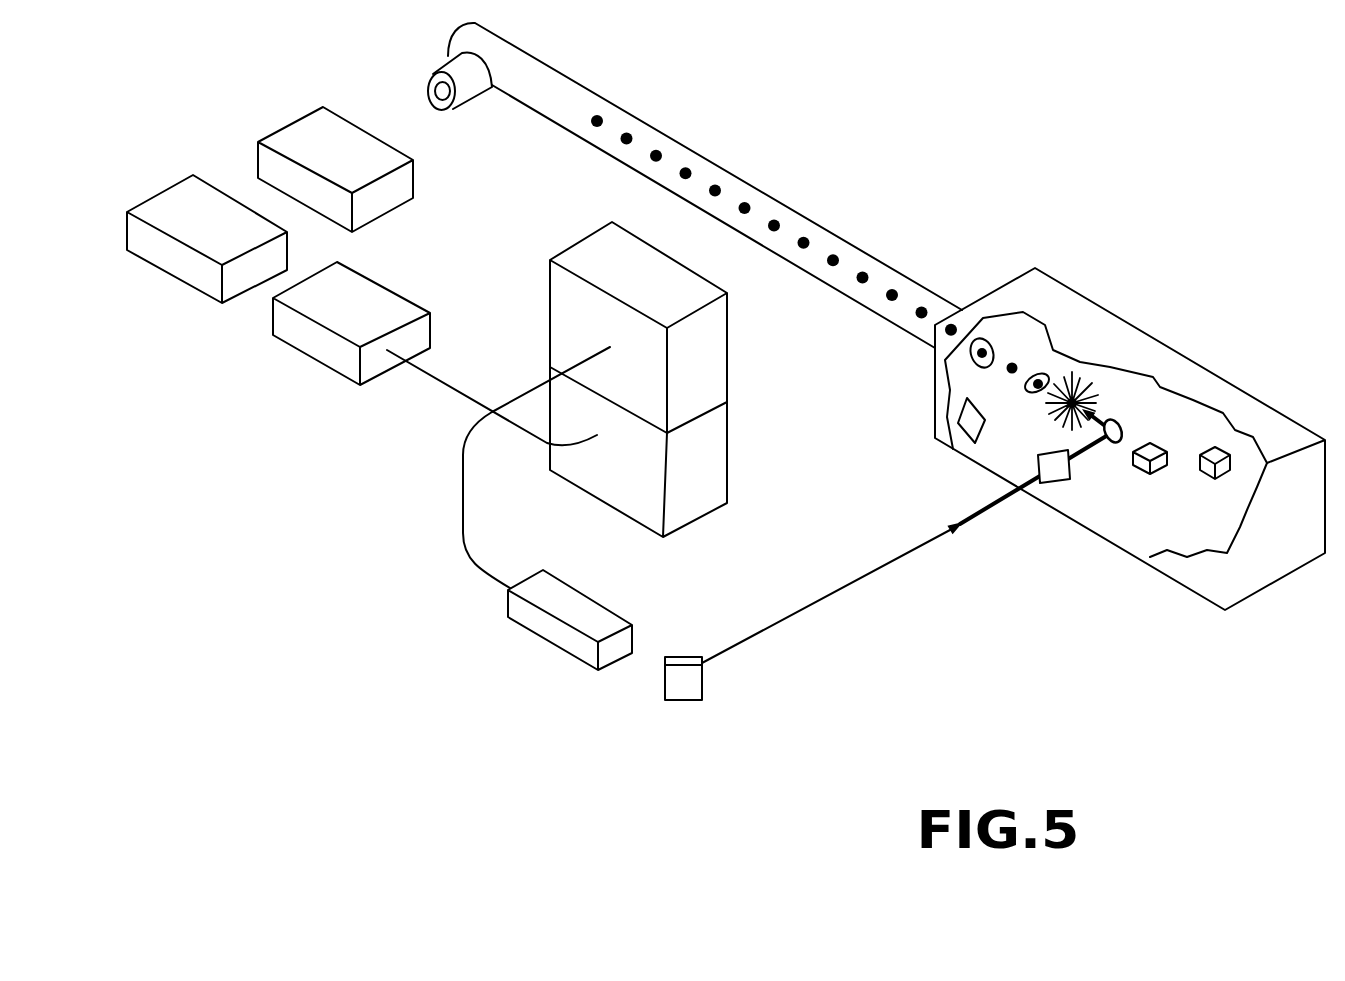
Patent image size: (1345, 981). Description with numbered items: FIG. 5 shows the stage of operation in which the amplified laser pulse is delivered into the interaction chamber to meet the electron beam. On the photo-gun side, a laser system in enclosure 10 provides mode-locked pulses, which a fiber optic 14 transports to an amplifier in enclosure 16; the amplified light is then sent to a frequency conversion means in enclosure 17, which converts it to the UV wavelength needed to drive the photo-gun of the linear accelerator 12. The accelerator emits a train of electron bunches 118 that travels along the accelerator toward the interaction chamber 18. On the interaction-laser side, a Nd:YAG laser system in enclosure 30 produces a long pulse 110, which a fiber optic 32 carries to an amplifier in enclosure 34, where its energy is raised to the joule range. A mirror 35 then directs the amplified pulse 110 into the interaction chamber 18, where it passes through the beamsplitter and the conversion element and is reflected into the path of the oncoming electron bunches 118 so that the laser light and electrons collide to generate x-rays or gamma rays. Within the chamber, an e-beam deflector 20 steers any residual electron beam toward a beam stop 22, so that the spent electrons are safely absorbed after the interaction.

The linear accelerator 12 is at (543, 63).
The electron bunches 118 is at (837, 258).
The frequency conversion means enclosure 17 is at (293, 143).
The amplifier enclosure 16 is at (320, 352).
The fiber optic 14 is at (453, 393).
The laser system enclosure 30 is at (710, 370).
The laser system enclosure 10 is at (705, 472).
The fiber optic 32 is at (463, 522).
The amplifier enclosure 34 is at (563, 633).
The mirror 35 is at (703, 687).
The interaction chamber 18 is at (1110, 308).
The e-beam deflector 20 is at (1157, 447).
The beam stop 22 is at (1227, 450).
The long pulse 110 is at (1020, 490).